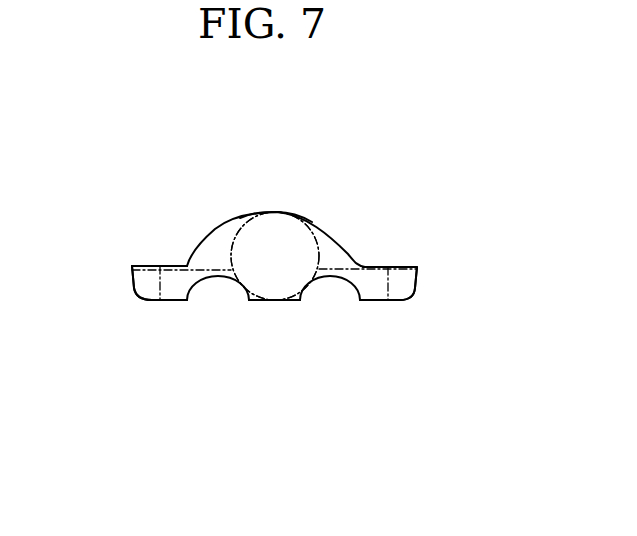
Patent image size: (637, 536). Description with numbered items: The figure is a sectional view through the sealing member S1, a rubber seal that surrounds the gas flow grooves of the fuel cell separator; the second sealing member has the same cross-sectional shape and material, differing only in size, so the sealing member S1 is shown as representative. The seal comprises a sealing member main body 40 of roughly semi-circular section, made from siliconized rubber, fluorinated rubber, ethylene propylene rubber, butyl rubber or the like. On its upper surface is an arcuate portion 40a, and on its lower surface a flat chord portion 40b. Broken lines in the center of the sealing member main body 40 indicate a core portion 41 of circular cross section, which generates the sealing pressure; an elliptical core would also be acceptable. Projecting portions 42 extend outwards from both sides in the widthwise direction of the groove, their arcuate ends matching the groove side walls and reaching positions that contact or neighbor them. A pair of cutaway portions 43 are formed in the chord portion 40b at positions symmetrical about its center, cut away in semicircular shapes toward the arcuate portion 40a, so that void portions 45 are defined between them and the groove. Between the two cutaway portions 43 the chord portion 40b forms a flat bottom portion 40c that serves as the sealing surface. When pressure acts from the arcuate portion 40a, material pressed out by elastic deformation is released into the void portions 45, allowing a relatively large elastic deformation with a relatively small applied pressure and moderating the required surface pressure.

The sealing member main body 40 is at (337, 231).
The arcuate portion 40a is at (253, 212).
The flat chord portion 40b is at (277, 380).
The flat bottom portion (sealing surface) 40c is at (277, 300).
The core portion 41 is at (291, 258).
The projecting portions 42 is at (180, 300).
The cutaway portions 43 is at (220, 300).
The void portions 45 is at (235, 300).
The sealing member S1 is at (278, 192).